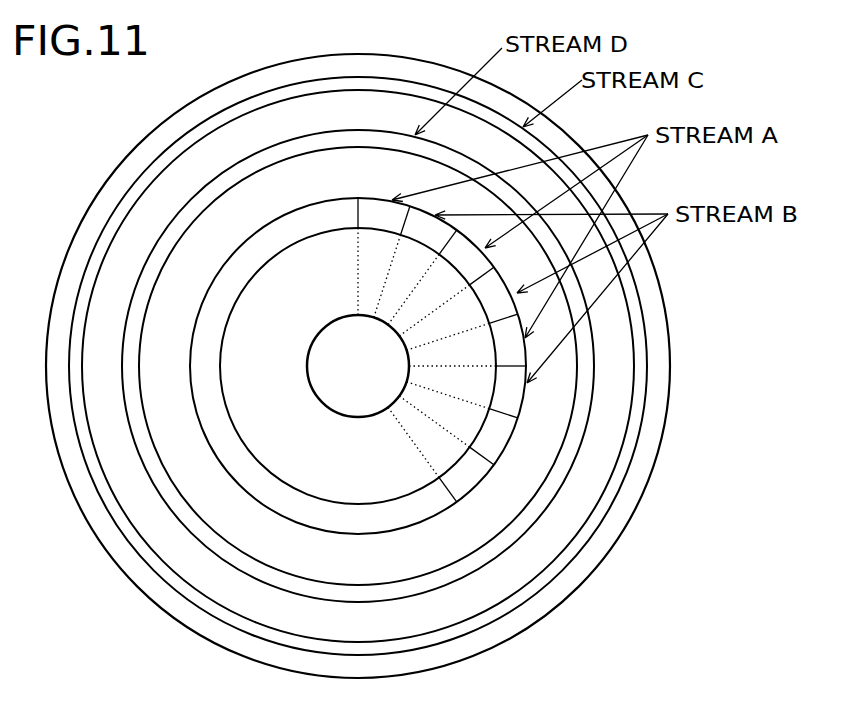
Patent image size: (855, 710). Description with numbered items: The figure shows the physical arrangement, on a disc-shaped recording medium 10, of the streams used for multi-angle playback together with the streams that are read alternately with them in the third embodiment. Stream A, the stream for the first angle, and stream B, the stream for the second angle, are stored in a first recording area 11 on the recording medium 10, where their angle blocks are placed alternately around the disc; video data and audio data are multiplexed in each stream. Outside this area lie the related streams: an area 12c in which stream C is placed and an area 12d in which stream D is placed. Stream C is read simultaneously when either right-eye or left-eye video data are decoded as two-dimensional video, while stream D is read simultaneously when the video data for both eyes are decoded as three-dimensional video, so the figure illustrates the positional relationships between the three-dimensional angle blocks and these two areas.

The recording medium 10 is at (120, 570).
The first recording area 11 is at (232, 252).
The area in which stream C is placed 12c is at (530, 598).
The area in which stream D is placed 12d is at (543, 518).